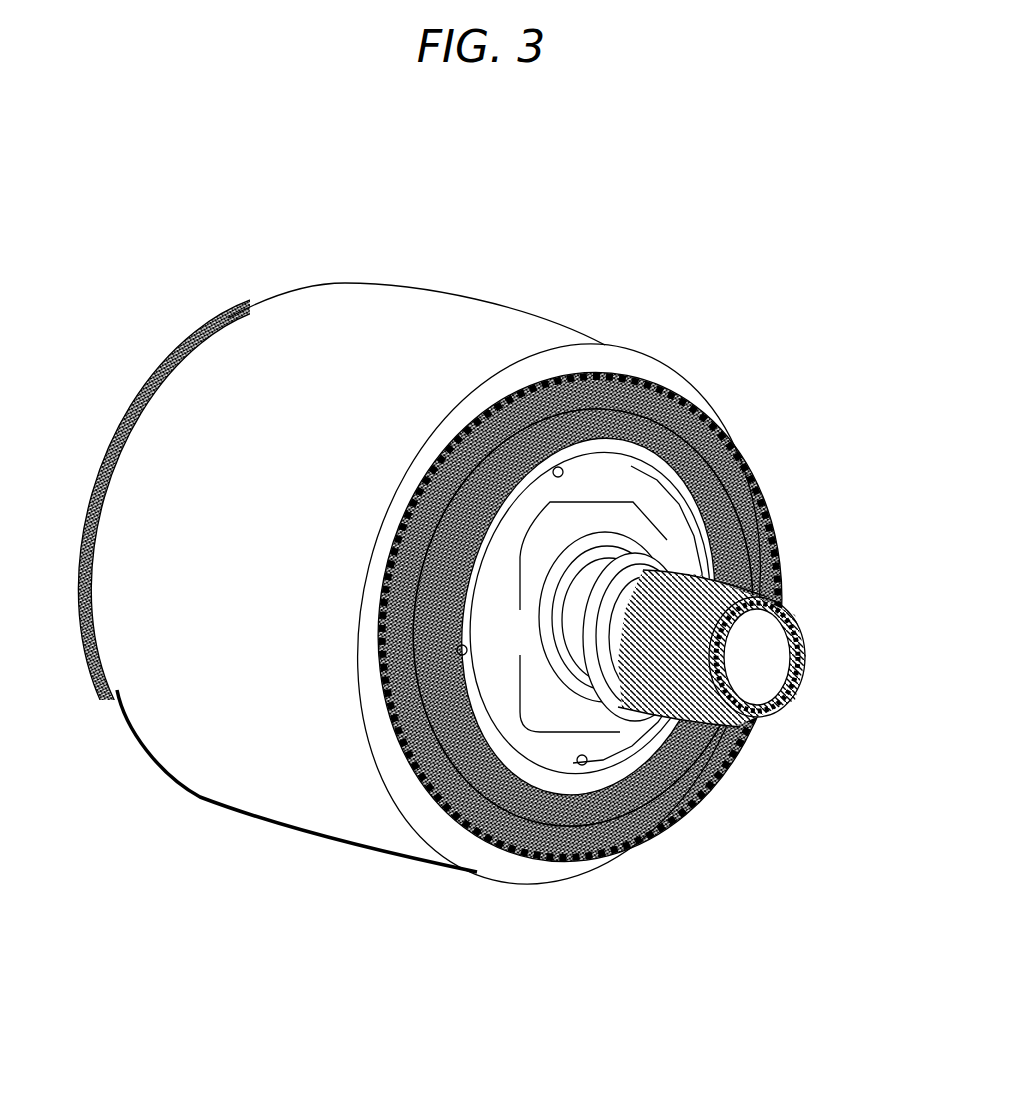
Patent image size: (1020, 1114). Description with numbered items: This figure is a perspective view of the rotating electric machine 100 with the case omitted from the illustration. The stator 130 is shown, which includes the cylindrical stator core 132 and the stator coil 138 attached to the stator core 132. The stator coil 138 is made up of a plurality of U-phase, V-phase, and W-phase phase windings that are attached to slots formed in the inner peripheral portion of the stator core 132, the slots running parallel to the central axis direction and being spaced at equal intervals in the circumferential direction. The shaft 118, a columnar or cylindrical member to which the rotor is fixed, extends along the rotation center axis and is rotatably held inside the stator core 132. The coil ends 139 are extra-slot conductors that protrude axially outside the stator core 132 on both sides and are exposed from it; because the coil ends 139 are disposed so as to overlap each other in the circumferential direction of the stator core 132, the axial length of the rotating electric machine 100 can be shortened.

The rotating electric machine 100 is at (738, 266).
The shaft 118 is at (800, 620).
The stator 130 is at (730, 383).
The stator core 132 is at (440, 308).
The stator coil 138 is at (770, 540).
The coil end 139 is at (602, 907).